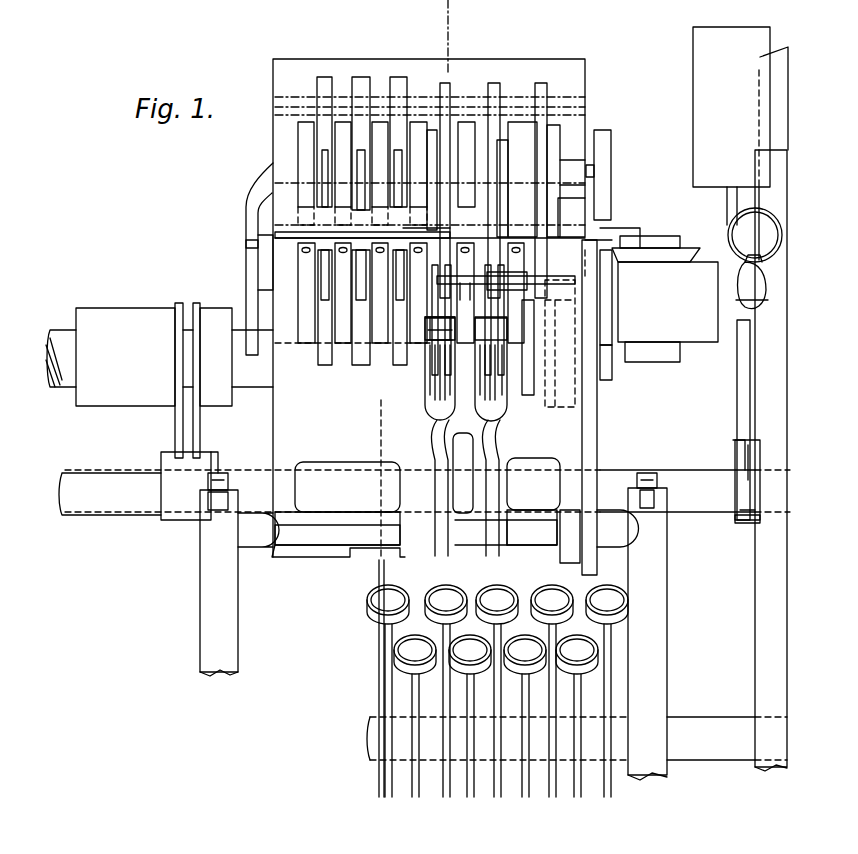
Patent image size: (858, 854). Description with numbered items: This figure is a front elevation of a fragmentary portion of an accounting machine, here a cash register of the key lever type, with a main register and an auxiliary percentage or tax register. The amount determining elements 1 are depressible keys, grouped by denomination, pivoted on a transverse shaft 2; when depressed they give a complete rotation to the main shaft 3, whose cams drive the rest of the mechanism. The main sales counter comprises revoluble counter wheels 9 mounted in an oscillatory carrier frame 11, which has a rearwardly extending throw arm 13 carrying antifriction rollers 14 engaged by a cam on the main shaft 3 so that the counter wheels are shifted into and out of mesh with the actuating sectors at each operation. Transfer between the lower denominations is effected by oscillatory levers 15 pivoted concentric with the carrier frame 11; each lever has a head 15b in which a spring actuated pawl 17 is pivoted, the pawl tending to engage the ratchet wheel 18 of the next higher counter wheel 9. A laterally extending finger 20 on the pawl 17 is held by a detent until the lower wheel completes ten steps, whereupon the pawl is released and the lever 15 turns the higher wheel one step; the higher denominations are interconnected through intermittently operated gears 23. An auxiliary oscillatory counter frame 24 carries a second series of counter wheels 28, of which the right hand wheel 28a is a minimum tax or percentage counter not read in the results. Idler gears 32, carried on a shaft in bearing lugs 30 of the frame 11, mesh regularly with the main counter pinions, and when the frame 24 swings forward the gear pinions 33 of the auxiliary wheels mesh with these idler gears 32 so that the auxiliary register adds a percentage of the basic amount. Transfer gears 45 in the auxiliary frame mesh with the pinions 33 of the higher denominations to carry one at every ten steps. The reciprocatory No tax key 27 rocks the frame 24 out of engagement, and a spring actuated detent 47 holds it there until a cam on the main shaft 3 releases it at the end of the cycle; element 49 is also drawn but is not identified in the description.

The amount determining elements 1 is at (412, 598).
The transverse shaft 2 is at (695, 705).
The main shaft 3 is at (411, 398).
The counter wheels 9 is at (350, 345).
The oscillatory carrier frame 11 is at (273, 417).
The throw arm 13 is at (597, 437).
The antifriction rollers 14 is at (567, 563).
The oscillatory levers 15 is at (436, 443).
The head 15b is at (428, 368).
The spring actuated pawl 17 is at (430, 362).
The ratchet wheel 18 is at (433, 205).
The laterally extending finger 20 is at (470, 282).
The intermittently operated gears 23 is at (357, 363).
The auxiliary oscillatory counter frame 24 is at (585, 67).
The reciprocatory key 27 is at (782, 232).
The counter wheels 28 is at (340, 122).
The minimum tax or percentage counter wheel 28a is at (515, 130).
The bearing lugs 30 is at (275, 222).
The idler gears 32 is at (558, 155).
The gear pinions 33 is at (508, 192).
The gears 45 is at (370, 75).
The spring actuated detent 47 is at (766, 294).
The side plates 49 is at (737, 368).